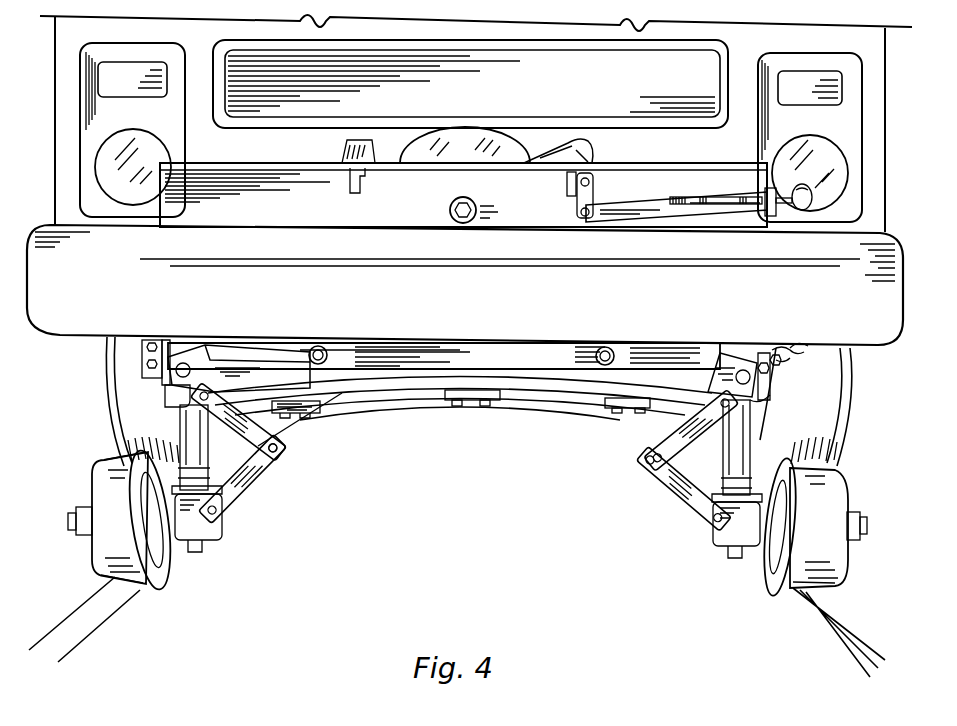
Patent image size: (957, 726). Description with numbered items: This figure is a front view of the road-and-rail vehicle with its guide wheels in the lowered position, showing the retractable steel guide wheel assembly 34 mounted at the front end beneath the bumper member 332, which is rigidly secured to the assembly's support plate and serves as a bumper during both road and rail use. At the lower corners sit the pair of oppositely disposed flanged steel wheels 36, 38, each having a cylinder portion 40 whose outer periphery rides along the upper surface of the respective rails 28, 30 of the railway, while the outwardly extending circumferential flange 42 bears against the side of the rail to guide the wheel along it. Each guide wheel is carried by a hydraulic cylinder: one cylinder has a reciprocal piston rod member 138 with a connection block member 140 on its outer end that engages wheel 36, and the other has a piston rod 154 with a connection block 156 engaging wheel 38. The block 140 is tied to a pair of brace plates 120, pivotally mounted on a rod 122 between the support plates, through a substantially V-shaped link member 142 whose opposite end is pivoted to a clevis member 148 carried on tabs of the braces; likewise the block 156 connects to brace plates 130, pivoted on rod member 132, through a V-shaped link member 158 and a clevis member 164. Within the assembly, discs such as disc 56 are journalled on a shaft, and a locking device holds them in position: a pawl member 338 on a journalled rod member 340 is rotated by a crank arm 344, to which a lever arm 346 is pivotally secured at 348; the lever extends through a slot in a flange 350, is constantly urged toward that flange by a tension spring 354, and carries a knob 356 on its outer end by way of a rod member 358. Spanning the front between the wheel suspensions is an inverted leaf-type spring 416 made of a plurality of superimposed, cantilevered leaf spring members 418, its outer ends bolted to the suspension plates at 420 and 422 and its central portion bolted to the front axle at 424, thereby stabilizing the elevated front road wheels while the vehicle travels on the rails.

The rail 28 is at (850, 657).
The rail 30 is at (72, 636).
The guide wheel assembly 34 is at (636, 380).
The flanged steel wheel 36 is at (819, 546).
The flanged steel wheel 38 is at (110, 546).
The cylinder portion 40 is at (112, 470).
The circumferential flange 42 is at (152, 588).
The disc 56 is at (428, 155).
The brace plate 120 is at (730, 372).
The rod 122 is at (605, 347).
The brace plate 130 is at (196, 355).
The rod member 132 is at (318, 346).
The piston rod member 138 is at (733, 447).
The connection block member 140 is at (735, 532).
The V-shaped link member 142 is at (686, 494).
The clevis member 148 is at (672, 435).
The piston rod 154 is at (196, 449).
The connection block 156 is at (199, 523).
The V-shaped link member 158 is at (243, 490).
The clevis member 164 is at (300, 441).
The bumper member 332 is at (74, 318).
The pawl member 338 is at (598, 154).
The rod member 340 is at (567, 184).
The crank arm 344 is at (578, 201).
The lever arm 346 is at (648, 212).
The pivot 348 is at (582, 217).
The flange 350 is at (771, 218).
The tension spring 354 is at (708, 208).
The knob 356 is at (812, 208).
The rod member 358 is at (781, 206).
The inverted leaf-type spring 416 is at (531, 405).
The leaf spring member 418 is at (426, 388).
The bolted connection 420 is at (640, 418).
The bolted connection 422 is at (305, 412).
The bolted connection 424 is at (494, 401).